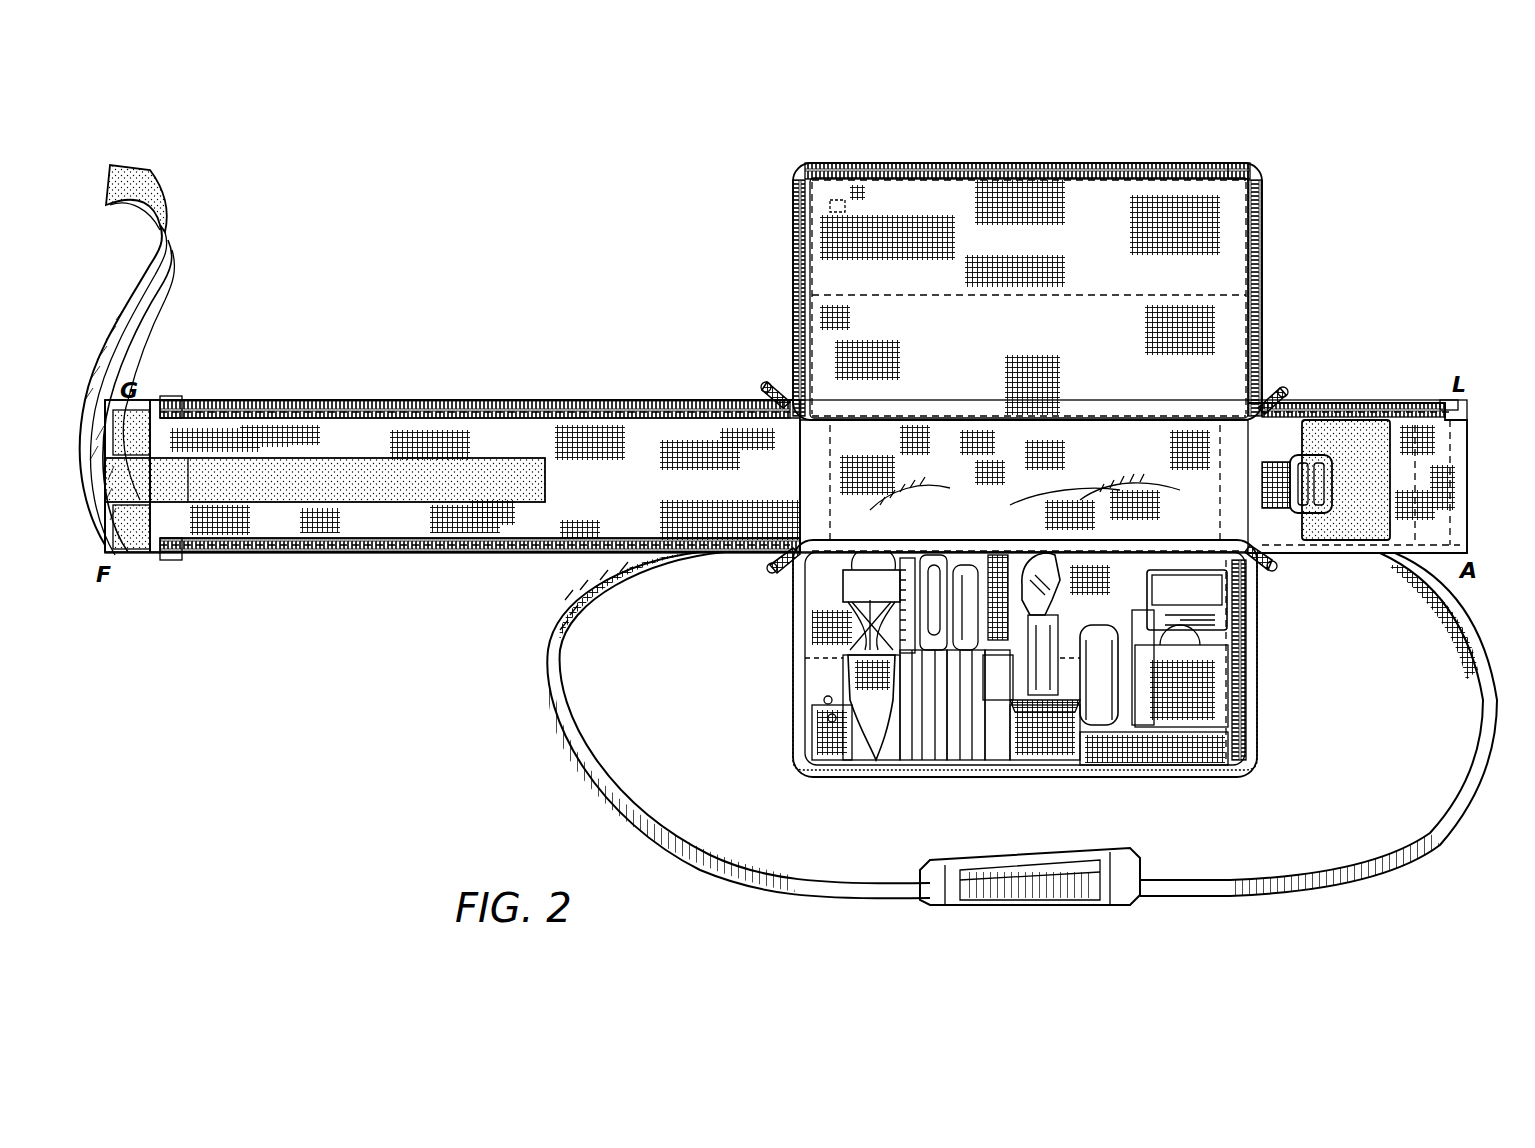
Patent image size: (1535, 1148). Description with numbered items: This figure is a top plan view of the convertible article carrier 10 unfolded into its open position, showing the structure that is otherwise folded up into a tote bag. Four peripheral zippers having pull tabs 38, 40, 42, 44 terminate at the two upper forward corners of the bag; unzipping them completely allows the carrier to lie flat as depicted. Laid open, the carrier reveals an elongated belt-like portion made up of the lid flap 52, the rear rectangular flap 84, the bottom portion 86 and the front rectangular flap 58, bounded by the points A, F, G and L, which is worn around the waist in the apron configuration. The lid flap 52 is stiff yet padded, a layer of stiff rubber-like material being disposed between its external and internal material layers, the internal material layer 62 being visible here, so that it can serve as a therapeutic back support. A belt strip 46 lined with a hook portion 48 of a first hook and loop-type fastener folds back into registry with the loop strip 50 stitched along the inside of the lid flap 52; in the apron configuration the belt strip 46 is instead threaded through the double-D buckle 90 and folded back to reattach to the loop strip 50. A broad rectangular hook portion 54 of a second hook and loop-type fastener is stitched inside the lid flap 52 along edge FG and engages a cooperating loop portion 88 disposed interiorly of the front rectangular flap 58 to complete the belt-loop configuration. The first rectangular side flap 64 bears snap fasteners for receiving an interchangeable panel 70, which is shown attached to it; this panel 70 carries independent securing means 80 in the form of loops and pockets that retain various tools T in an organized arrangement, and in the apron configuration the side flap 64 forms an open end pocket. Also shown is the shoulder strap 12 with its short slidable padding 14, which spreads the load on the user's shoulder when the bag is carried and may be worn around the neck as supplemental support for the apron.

The convertible article carrier 10 is at (1365, 236).
The shoulder strap 12 is at (552, 702).
The slidable padding 14 is at (940, 862).
The pull tab 38 is at (765, 385).
The pull tab 40 is at (1285, 393).
The pull tab 42 is at (775, 565).
The pull tab 44 is at (1270, 570).
The belt strip 46 is at (158, 250).
The hook portion 48 is at (158, 195).
The loop strip 50 is at (415, 472).
The lid flap 52 is at (344, 362).
The hook portion 54 is at (156, 499).
The front rectangular flap 58 is at (1400, 386).
The internal material layer 62 is at (625, 516).
The first rectangular side flap 64 is at (1270, 722).
The interchangeable panel 70 is at (1048, 132).
The independent securing means 80 is at (948, 760).
The rear rectangular flap 84 is at (572, 362).
The bottom portion 86 is at (1115, 452).
The loop portion 88 is at (1340, 550).
The double-D buckle 90 is at (1310, 455).
The tools T is at (850, 610).